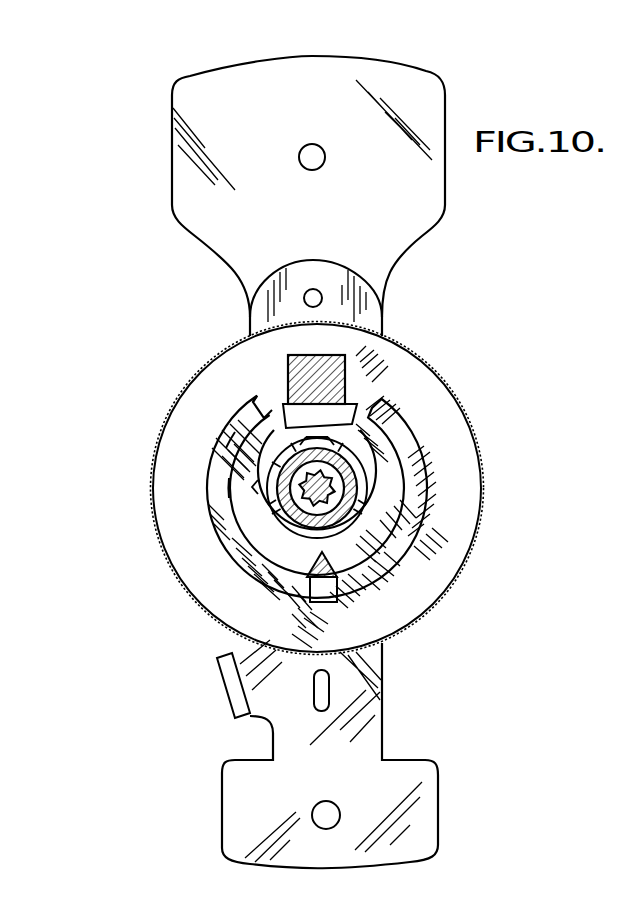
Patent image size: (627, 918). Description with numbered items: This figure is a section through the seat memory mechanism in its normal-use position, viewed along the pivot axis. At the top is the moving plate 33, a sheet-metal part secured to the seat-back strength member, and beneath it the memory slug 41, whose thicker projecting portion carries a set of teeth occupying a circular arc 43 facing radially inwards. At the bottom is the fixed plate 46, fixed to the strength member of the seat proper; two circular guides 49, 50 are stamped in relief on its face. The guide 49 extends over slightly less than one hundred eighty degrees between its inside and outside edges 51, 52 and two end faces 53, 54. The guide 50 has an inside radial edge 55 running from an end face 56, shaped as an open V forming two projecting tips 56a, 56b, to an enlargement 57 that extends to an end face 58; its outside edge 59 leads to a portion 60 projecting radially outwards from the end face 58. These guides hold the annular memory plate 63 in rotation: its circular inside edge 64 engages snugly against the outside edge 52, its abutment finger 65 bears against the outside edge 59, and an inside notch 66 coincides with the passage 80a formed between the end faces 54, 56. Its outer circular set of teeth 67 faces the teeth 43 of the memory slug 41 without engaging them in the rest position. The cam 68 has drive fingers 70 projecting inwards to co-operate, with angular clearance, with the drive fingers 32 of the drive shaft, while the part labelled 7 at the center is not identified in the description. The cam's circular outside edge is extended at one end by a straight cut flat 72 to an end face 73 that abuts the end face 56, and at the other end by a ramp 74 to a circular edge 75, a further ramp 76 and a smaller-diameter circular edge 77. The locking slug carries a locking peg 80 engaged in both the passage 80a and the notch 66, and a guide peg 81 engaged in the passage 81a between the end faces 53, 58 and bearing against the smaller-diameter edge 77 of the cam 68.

The shaft 7 is at (343, 492).
The drive fingers 32 is at (375, 518).
The moving plate 33 is at (448, 91).
The memory slug 41 is at (366, 274).
The circular arc of teeth 43 is at (330, 336).
The fixed plate 46 is at (441, 788).
The circular guide 49 is at (428, 491).
The circular guide 50 is at (262, 512).
The inside edge 51 is at (350, 468).
The outside edge 52 is at (432, 512).
The end face 53 is at (332, 600).
The end face 54 is at (335, 385).
The inside radial edge 55 is at (258, 486).
The end face 56 is at (248, 426).
The projecting tip 56a is at (278, 403).
The projecting tip 56b is at (237, 432).
The enlargement 57 is at (270, 556).
The end face 58 is at (312, 610).
The outside edge 59 is at (285, 575).
The projecting portion 60 is at (305, 590).
The memory plate 63 is at (275, 650).
The circular inside edge 64 is at (427, 548).
The abutment finger 65 is at (257, 397).
The inside notch 66 is at (345, 357).
The circular set of teeth 67 is at (478, 438).
The cam 68 is at (250, 463).
The drive fingers 70 is at (278, 496).
The straight cut flat 72 is at (330, 424).
The end face 73 is at (360, 440).
The roller 74 is at (365, 540).
The circular edge 75 is at (368, 570).
The ramp 76 is at (268, 540).
The circular edge 77 is at (272, 470).
The locking peg 80 is at (360, 368).
The passage 80a is at (365, 404).
The guide peg 81 is at (340, 585).
The passage 81a is at (317, 633).